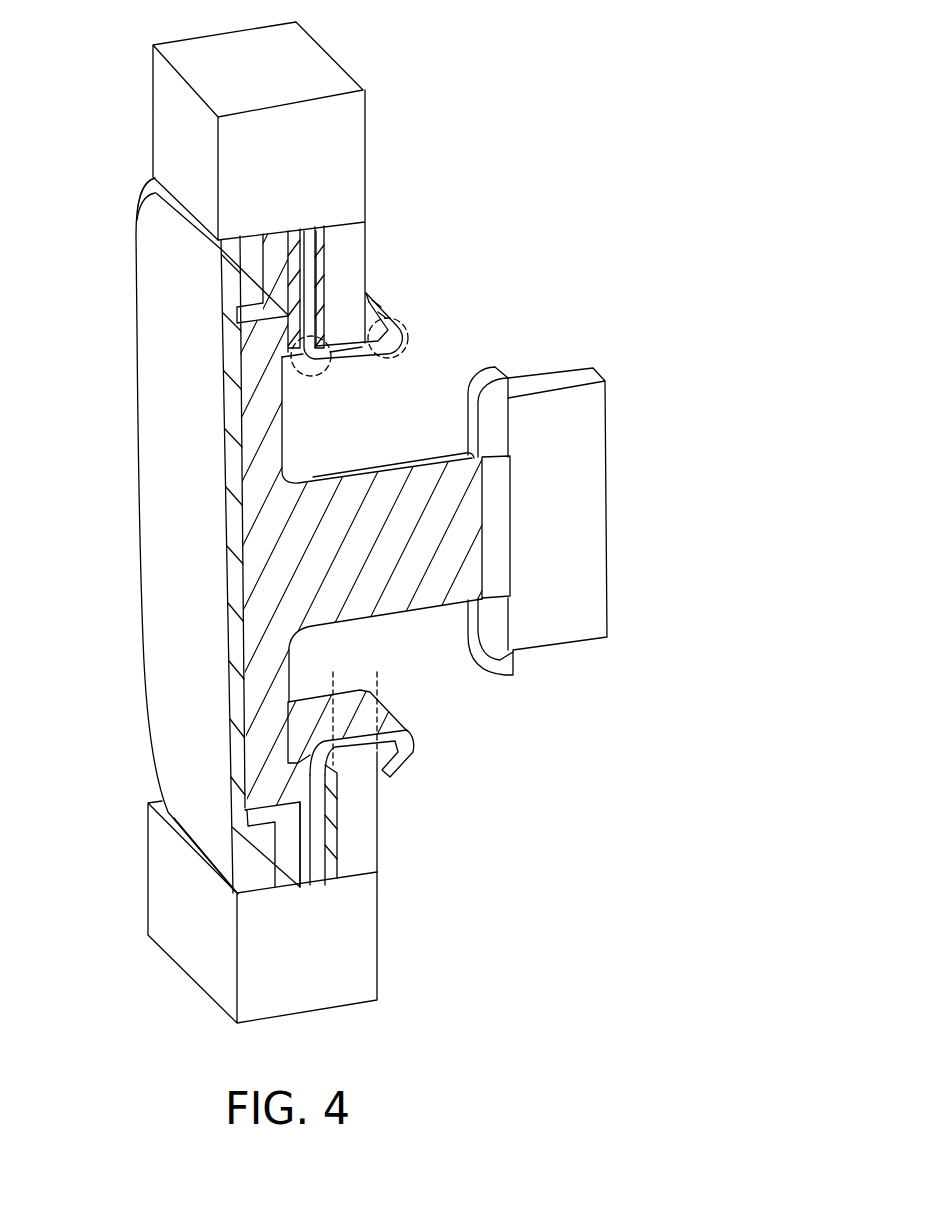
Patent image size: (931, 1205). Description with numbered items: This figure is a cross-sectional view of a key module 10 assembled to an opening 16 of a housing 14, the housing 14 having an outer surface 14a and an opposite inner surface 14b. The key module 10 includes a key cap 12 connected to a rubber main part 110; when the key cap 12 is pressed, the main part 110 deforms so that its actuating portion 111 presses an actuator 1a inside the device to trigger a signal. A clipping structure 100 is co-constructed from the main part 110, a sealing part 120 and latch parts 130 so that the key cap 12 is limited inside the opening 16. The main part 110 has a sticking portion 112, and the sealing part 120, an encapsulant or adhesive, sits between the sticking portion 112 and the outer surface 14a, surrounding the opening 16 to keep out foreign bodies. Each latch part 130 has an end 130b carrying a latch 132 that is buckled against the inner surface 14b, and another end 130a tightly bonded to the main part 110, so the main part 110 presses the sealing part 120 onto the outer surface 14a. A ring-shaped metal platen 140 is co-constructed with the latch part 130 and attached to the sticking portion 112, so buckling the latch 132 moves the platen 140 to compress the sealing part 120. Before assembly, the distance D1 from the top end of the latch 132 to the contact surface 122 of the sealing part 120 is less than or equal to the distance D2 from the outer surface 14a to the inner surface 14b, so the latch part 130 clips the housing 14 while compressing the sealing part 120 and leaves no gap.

The key module 10 is at (474, 141).
The clipping structure 100 is at (305, 225).
The main part 110 is at (295, 570).
The actuating portion 111 is at (443, 575).
The sticking portion 112 is at (296, 266).
The sealing part 120 is at (324, 272).
The contact surface 122 is at (337, 790).
The latch part 130 is at (362, 362).
The another end 130a is at (322, 372).
The end 130b is at (406, 326).
The latch 132 is at (372, 308).
The platen 140 is at (322, 853).
The key cap 12 is at (162, 273).
The housing 14 is at (357, 963).
The outer surface 14a is at (335, 838).
The inner surface 14b is at (377, 827).
The opening 16 is at (341, 350).
The actuator 1a is at (545, 628).
The distance D1 is at (367, 682).
The distance D2 is at (337, 867).